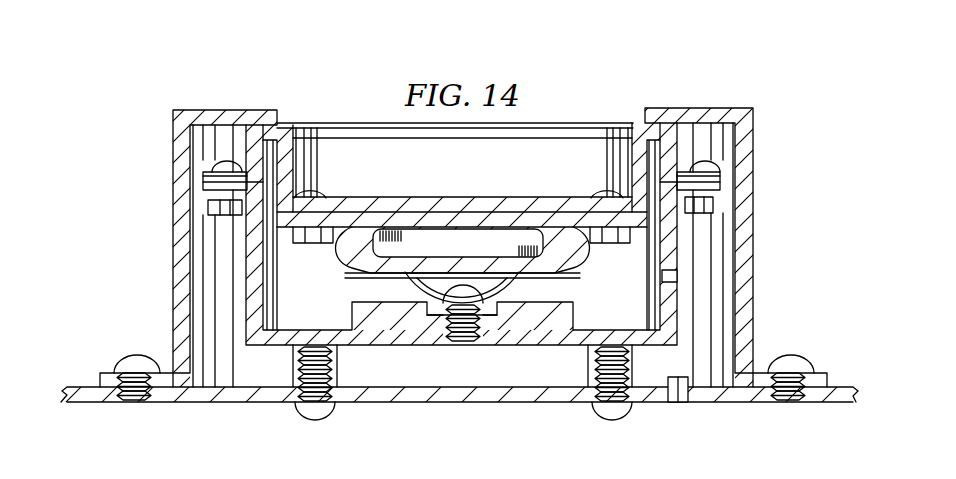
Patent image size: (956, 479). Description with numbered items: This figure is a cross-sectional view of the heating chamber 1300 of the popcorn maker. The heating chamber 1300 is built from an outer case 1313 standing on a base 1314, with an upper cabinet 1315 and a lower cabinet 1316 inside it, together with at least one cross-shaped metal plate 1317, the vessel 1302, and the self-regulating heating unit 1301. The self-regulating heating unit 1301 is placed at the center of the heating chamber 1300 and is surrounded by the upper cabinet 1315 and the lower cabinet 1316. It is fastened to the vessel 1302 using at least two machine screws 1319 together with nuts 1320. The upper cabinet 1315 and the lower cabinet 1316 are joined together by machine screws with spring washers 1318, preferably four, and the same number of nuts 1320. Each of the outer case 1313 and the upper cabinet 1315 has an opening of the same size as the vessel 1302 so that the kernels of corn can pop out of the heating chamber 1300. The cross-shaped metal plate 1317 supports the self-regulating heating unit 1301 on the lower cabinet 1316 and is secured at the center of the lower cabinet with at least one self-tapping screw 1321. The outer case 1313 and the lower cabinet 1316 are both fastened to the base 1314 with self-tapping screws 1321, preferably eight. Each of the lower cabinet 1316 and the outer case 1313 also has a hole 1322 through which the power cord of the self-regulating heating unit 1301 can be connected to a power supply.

The heating chamber 1300 is at (231, 60).
The self-regulating heating unit 1301 is at (422, 225).
The vessel 1302 is at (453, 197).
The outer case 1313 is at (173, 222).
The base 1314 is at (260, 403).
The upper cabinet 1315 is at (235, 148).
The lower cabinet 1316 is at (602, 330).
The cross-shaped metal plate 1317 is at (403, 297).
The spring washer 1318 is at (720, 188).
The machine screw 1319 is at (613, 195).
The nut 1320 is at (313, 247).
The self-tapping screw 1321 is at (132, 355).
The hole 1322 is at (672, 278).